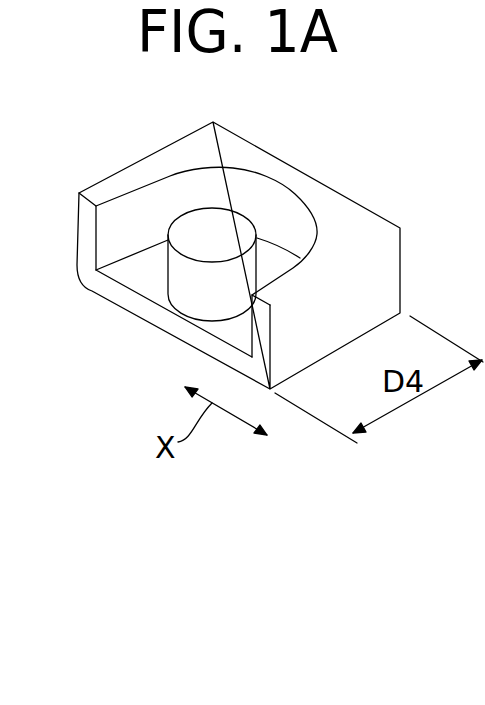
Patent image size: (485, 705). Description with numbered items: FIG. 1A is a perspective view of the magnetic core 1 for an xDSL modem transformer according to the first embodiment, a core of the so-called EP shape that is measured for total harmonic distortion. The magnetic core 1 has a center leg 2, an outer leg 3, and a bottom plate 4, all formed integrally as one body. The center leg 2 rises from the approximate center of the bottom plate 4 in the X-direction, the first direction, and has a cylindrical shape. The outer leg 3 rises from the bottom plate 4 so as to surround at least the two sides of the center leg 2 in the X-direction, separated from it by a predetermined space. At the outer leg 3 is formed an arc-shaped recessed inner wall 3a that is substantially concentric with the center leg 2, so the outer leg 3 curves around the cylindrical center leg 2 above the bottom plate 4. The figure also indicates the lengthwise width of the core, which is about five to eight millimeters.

The magnetic core 1 is at (53, 189).
The center leg 2 is at (185, 295).
The outer leg 3 is at (348, 220).
The arc-shaped recessed inner wall 3a is at (279, 203).
The bottom plate 4 is at (132, 270).